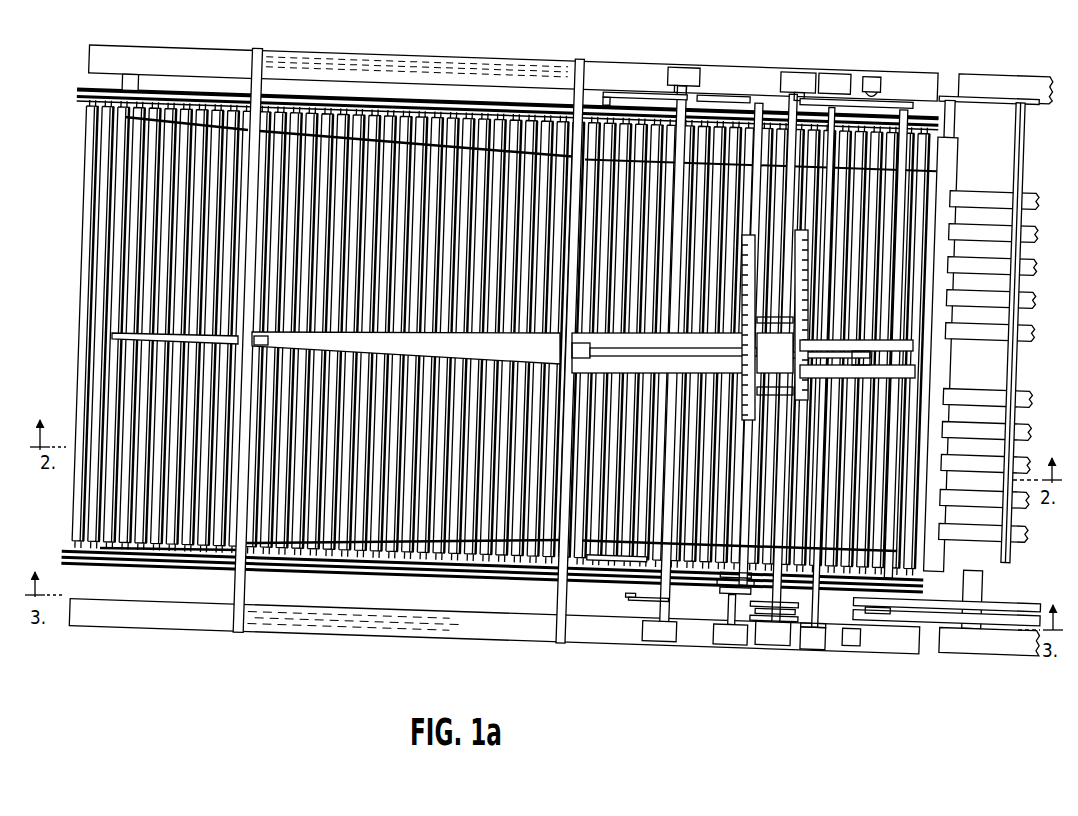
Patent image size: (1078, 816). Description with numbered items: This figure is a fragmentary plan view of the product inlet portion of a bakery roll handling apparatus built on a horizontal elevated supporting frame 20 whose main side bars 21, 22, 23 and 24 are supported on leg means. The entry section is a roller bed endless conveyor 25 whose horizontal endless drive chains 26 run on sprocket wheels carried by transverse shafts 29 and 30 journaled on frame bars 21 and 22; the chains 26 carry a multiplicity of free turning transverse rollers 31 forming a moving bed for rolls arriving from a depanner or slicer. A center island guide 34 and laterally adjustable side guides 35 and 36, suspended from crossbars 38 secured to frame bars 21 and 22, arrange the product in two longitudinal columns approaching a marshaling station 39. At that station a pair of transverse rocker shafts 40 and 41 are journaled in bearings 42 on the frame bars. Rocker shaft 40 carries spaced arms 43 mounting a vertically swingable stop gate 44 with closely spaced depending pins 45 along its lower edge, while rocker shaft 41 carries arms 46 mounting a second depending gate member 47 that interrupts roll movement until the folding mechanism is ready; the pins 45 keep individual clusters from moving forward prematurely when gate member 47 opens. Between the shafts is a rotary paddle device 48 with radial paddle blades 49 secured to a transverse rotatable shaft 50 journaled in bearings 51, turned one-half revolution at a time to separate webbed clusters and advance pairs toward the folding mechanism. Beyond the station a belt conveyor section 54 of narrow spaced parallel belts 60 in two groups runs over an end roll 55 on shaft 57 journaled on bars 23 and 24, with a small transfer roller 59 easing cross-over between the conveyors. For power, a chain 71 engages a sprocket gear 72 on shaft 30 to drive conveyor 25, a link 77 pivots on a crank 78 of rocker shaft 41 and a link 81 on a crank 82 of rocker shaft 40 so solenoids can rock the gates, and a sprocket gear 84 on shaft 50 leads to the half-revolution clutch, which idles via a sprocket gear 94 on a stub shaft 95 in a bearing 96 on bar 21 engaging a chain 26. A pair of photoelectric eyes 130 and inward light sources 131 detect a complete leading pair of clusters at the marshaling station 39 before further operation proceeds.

The horizontal elevated supporting frame 20 is at (405, 632).
The main side bar 21 is at (458, 634).
The main side bar 22 is at (505, 68).
The main side bar 23 is at (990, 645).
The main side bar 24 is at (1018, 84).
The roller bed endless conveyor 25 is at (315, 516).
The horizontal endless drive chains 26 is at (410, 97).
The transverse shaft 29 is at (133, 70).
The transverse shaft 30 is at (912, 103).
The transverse rollers 31 is at (200, 540).
The center island guide 34 is at (541, 353).
The side guide 35 is at (356, 602).
The side guide 36 is at (345, 122).
The crossbars 38 is at (583, 98).
The marshaling station 39 is at (772, 100).
The rocker shaft 40 is at (677, 118).
The rocker shaft 41 is at (832, 125).
The bearings 42 is at (686, 76).
The arms 43 is at (650, 94).
The stop gate 44 is at (757, 80).
The depending pins 45 is at (760, 326).
The arms 46 is at (890, 100).
The gate member 47 is at (940, 236).
The rotary paddle device 48 is at (760, 412).
The paddle blades 49 is at (803, 383).
The transverse rotatable shaft 50 is at (797, 70).
The bearings 51 is at (810, 75).
The belt conveyor section 54 is at (1037, 188).
The end roll 55 is at (1016, 373).
The shaft 57 is at (985, 581).
The transfer roller 59 is at (952, 175).
The belts 60 is at (1037, 290).
The chain 71 is at (1025, 645).
The sprocket gear 72 is at (878, 602).
The link 77 is at (835, 627).
The crank 78 is at (815, 628).
The link 81 is at (635, 597).
The crank 82 is at (642, 595).
The sprocket gear 84 is at (760, 607).
The sprocket gear 94 is at (722, 580).
The stub shaft 95 is at (727, 598).
The bearing 96 is at (727, 633).
The photoelectric eyes 130 is at (873, 88).
The light sources 131 is at (882, 368).